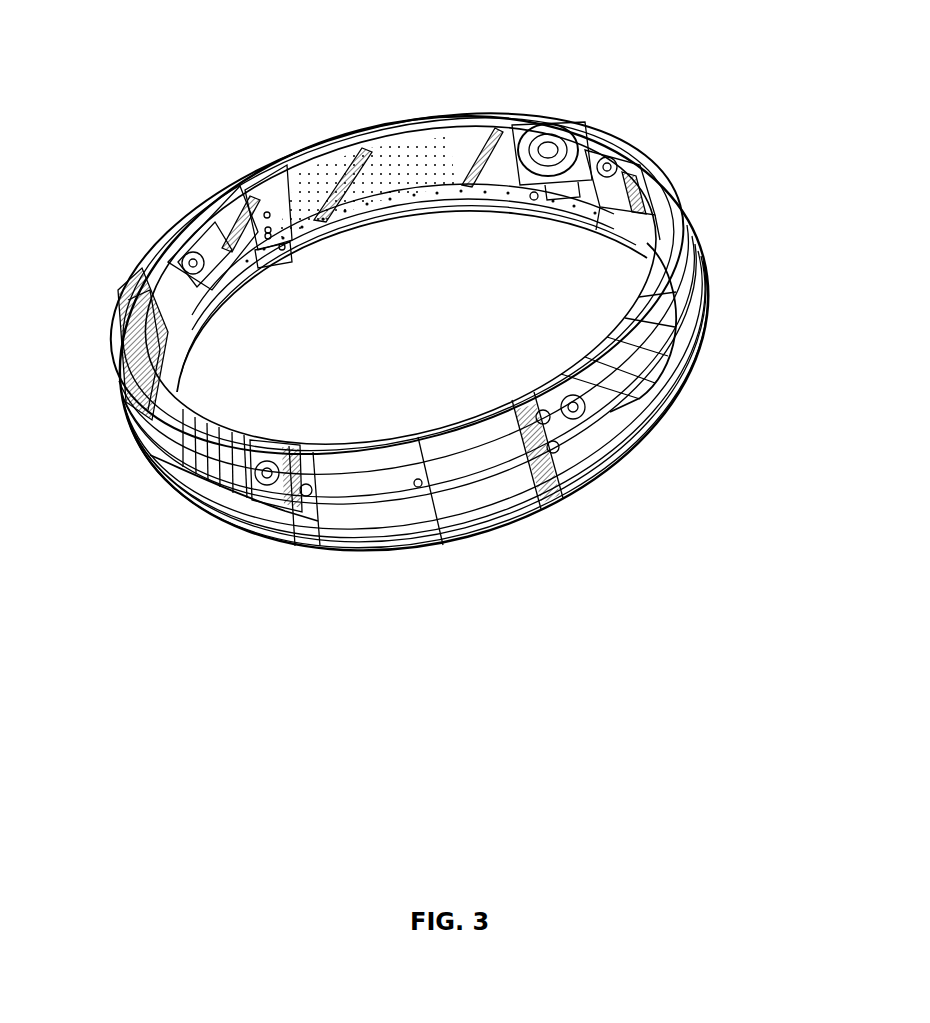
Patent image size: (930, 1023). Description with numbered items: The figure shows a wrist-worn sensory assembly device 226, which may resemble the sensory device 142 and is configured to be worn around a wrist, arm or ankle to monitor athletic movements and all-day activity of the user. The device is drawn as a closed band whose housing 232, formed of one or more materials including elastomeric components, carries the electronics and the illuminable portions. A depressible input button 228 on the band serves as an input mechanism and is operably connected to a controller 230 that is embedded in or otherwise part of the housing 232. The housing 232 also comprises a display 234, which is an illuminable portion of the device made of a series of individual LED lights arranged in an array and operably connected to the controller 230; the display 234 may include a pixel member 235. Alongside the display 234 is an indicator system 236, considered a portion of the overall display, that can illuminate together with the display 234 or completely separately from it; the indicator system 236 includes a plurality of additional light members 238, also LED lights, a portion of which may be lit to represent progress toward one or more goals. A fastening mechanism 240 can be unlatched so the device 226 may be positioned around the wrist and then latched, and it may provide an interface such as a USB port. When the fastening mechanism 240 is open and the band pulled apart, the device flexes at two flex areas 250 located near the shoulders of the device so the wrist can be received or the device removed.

The sensory device 142 is at (684, 140).
The wrist-worn sensory assembly device 226 is at (686, 142).
The depressible input button 228 is at (552, 112).
The controller 230 is at (119, 318).
The housing 232 is at (703, 222).
The display 234 is at (326, 172).
The pixel member 235 is at (387, 153).
The indicator system 236 is at (441, 203).
The light members 238 is at (397, 213).
The fastening mechanism 240 is at (452, 551).
The flex areas 250 is at (173, 213).